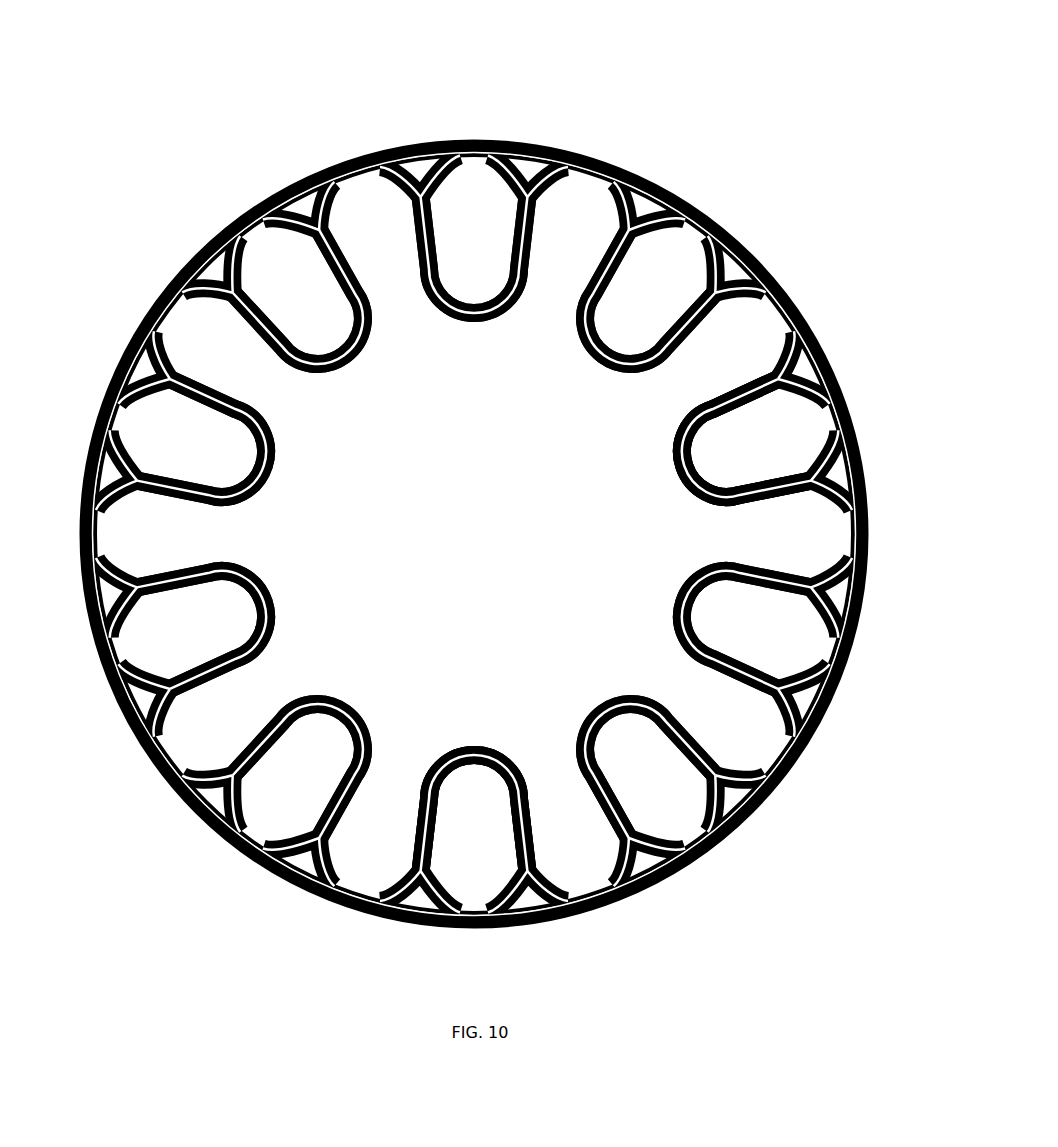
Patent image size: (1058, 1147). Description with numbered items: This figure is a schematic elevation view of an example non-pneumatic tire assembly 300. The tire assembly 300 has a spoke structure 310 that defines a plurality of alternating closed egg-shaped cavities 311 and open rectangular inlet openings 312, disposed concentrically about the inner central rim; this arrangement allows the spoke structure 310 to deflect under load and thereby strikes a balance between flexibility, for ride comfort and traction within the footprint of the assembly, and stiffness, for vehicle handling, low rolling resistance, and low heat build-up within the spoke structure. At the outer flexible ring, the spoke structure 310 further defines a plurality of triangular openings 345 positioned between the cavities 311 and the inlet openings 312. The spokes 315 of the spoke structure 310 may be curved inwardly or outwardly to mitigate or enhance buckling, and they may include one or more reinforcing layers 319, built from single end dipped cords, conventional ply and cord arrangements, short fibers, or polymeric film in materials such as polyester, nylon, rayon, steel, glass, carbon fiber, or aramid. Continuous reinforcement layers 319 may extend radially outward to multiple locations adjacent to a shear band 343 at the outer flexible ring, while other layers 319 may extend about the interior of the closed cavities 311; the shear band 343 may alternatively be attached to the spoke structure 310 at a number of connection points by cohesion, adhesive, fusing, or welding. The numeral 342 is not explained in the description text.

The tire assembly 300 is at (475, 499).
The spoke structure 310 is at (475, 529).
The closed egg-shaped cavities 311 is at (465, 185).
The open rectangular inlet openings 312 is at (360, 205).
The spokes 315 is at (688, 466).
The reinforcing layers 319 is at (452, 752).
The inner surface of ring 342 is at (168, 340).
The shear band 343 is at (255, 205).
The triangular openings 345 is at (405, 155).